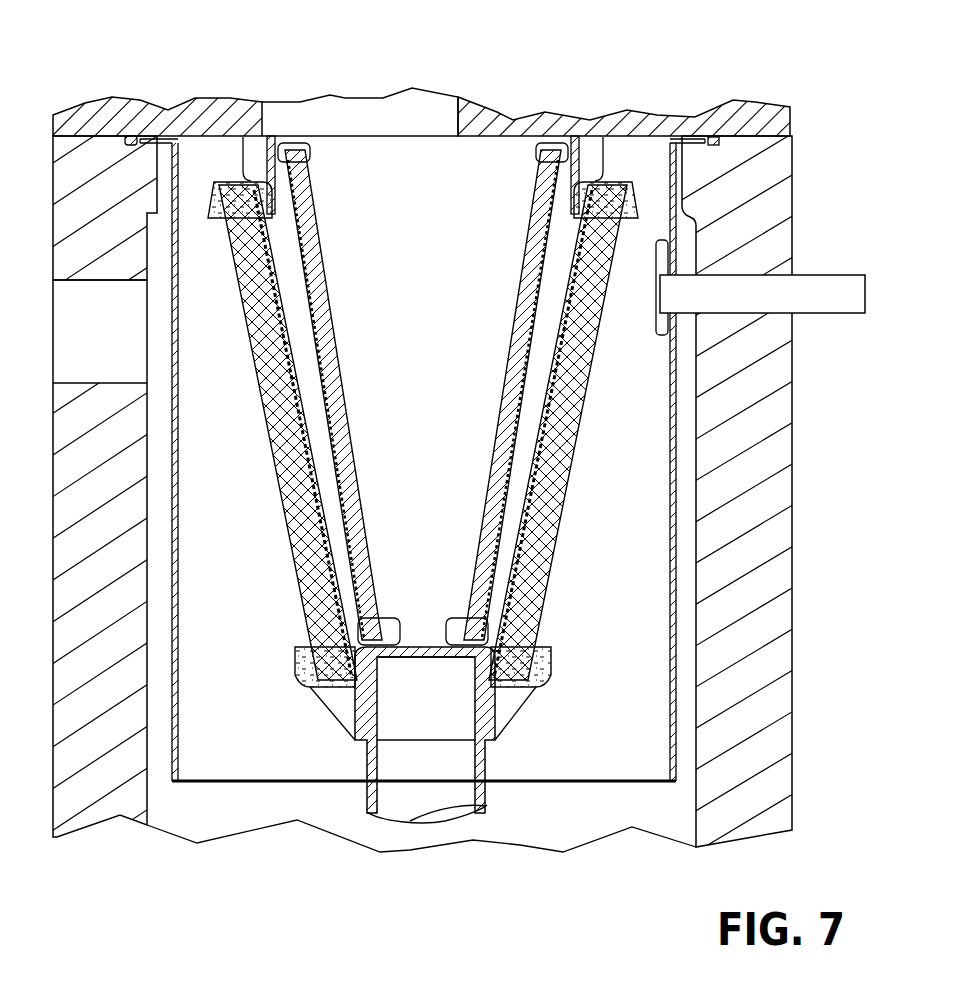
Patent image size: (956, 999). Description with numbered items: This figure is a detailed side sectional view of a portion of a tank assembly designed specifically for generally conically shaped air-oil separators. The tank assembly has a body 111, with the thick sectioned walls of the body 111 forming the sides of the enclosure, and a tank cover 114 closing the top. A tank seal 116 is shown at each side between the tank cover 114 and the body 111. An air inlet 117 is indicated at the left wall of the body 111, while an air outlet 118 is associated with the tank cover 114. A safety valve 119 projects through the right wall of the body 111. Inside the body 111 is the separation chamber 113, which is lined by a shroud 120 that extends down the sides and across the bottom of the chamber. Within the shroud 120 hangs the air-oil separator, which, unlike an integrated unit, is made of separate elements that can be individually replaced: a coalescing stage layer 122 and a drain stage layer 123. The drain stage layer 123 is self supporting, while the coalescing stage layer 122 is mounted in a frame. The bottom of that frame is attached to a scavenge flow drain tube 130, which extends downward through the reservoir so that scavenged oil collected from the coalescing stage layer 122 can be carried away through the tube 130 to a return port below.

The body 111 is at (778, 585).
The separation chamber 113 is at (157, 710).
The tank cover 114 is at (520, 128).
The tank seal 116 is at (132, 134).
The air inlet 117 is at (103, 281).
The air outlet 118 is at (322, 117).
The safety valve 119 is at (800, 299).
The shroud 120 is at (180, 690).
The coalescing stage layer 122 is at (528, 605).
The drain stage layer 123 is at (505, 448).
The scavenge flow drain tube 130 is at (365, 776).